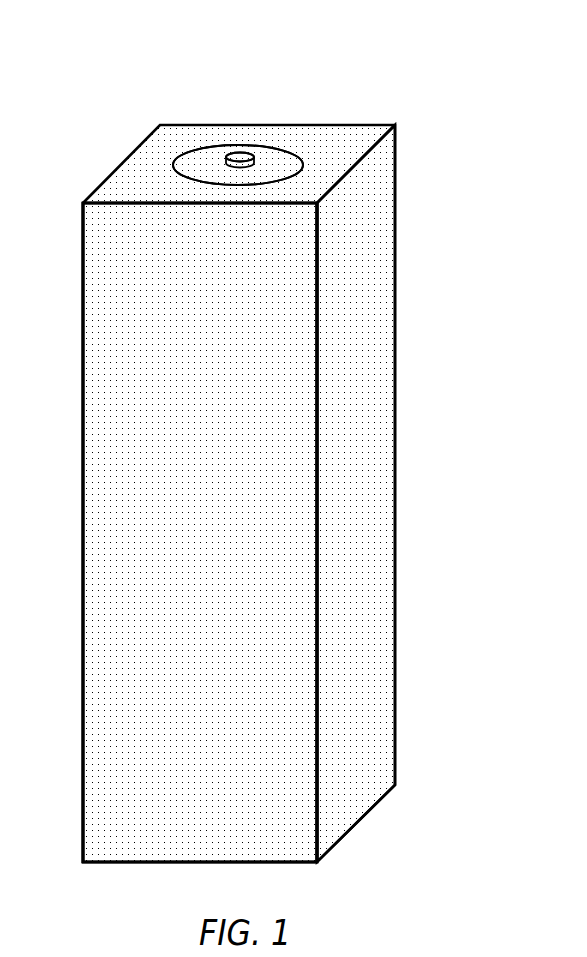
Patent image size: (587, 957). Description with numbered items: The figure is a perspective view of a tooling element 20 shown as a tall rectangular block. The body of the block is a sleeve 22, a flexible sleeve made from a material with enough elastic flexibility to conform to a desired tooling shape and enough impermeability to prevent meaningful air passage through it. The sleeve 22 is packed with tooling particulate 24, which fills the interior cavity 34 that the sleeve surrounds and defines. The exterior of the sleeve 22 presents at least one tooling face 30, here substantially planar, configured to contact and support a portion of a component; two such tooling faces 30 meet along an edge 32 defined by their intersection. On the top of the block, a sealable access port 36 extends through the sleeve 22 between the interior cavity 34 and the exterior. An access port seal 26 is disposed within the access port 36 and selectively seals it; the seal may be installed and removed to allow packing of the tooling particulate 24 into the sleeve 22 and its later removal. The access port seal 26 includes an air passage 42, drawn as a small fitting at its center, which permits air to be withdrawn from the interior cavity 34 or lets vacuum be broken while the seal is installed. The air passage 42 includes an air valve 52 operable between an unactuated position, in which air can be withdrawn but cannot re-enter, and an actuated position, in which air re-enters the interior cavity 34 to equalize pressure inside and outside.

The tooling element 20 is at (393, 97).
The sleeve 22 is at (361, 382).
The tooling particulate 24 is at (118, 577).
The access port seal 26 is at (275, 155).
The tooling face 30 is at (153, 414).
The edge 32 is at (317, 508).
The interior cavity 34 is at (123, 717).
The access port 36 is at (207, 147).
The air passage 42 is at (243, 154).
The air valve 52 is at (227, 150).